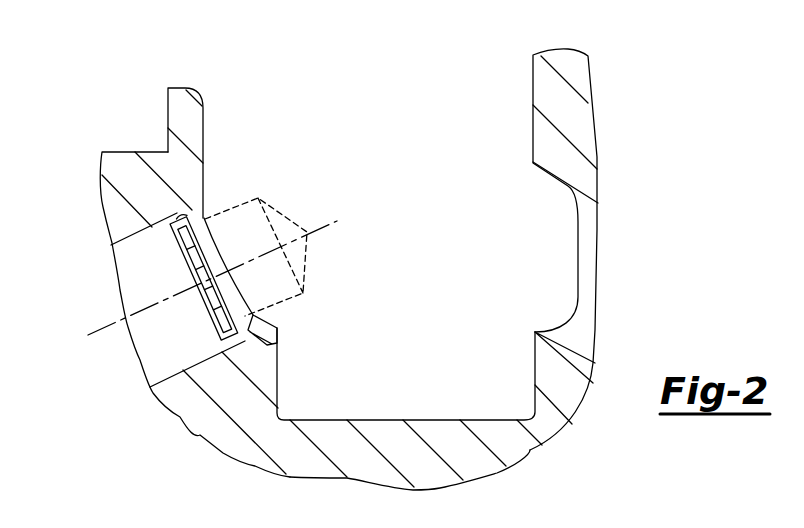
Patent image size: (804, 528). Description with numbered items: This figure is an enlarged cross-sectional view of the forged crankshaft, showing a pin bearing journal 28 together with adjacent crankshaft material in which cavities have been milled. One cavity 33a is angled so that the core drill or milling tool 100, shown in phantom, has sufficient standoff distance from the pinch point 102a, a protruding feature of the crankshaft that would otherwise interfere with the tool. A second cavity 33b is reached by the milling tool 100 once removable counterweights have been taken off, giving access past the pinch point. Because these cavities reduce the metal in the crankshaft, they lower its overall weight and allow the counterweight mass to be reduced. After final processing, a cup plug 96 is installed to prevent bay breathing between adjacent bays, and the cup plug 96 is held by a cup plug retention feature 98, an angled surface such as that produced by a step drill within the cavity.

The pin bearing journal 28 is at (390, 420).
The cavity 33a is at (580, 327).
The cavity 33b is at (137, 264).
The cup plug 96 is at (239, 357).
The cup plug retention feature 98 is at (275, 338).
The core drill or milling tool 100 is at (245, 200).
The pinch point 102a is at (182, 88).